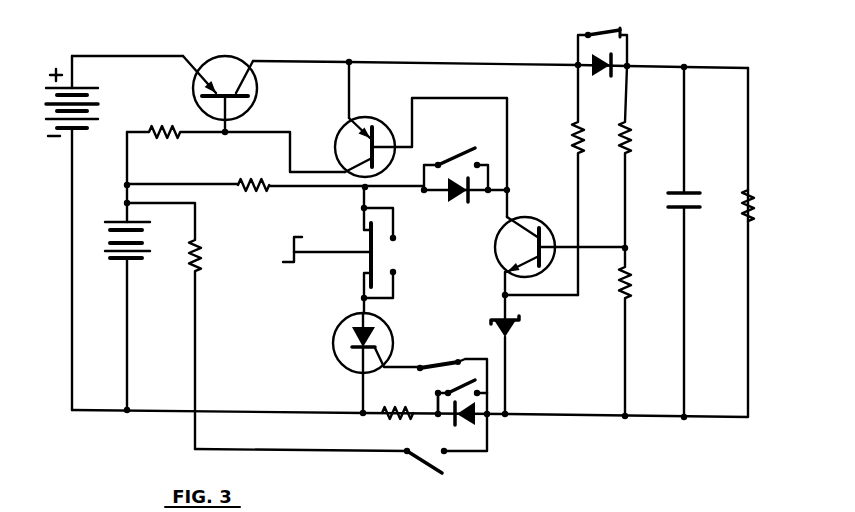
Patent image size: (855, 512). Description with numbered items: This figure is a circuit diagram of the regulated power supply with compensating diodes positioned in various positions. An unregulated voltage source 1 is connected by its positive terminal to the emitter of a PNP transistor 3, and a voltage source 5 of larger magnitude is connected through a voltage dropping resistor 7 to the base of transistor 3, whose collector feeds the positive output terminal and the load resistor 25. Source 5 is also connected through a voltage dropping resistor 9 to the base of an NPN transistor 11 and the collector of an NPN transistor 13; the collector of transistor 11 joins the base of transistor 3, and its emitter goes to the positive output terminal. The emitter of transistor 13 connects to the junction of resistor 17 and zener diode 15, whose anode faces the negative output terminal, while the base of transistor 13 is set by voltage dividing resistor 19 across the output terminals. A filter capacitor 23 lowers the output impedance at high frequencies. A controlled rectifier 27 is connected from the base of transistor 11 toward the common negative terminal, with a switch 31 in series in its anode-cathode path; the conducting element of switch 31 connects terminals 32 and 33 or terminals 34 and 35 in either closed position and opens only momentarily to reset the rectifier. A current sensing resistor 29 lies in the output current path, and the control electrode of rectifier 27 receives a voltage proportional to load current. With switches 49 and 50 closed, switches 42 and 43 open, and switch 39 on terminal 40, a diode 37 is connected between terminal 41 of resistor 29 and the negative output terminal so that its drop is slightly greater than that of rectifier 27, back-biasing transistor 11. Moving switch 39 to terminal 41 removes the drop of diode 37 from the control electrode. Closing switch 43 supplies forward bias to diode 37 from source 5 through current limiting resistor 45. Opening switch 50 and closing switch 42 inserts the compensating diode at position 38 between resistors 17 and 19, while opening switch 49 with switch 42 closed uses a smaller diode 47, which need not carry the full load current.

The unregulated voltage source 1 is at (88, 87).
The PNP transistor 3 is at (223, 54).
The voltage source 5 is at (113, 222).
The voltage dropping resistor 7 is at (167, 123).
The voltage dropping resistor 9 is at (253, 182).
The NPN transistor 11 is at (353, 118).
The NPN transistor 13 is at (522, 222).
The zener diode 15 is at (522, 318).
The resistor 17 is at (572, 133).
The voltage dividing resistor 19 is at (637, 133).
The filter capacitor 23 is at (693, 192).
The load resistor 25 is at (752, 188).
The controlled rectifier 27 is at (385, 340).
The current sensing resistor 29 is at (385, 418).
The switch 31 is at (311, 250).
The terminal 32 is at (367, 230).
The terminal 33 is at (361, 273).
The terminal 34 is at (395, 238).
The terminal 35 is at (393, 272).
The diode 37 is at (480, 419).
The compensating diode 38 is at (595, 78).
The switch 39 is at (437, 362).
The terminal 40 is at (461, 358).
The terminal 41 is at (437, 418).
The switch 42 is at (470, 381).
The switch 43 is at (422, 466).
The current limiting resistor 45 is at (200, 258).
The diode 47 is at (452, 200).
The switch 49 is at (457, 148).
The switch 50 is at (597, 32).